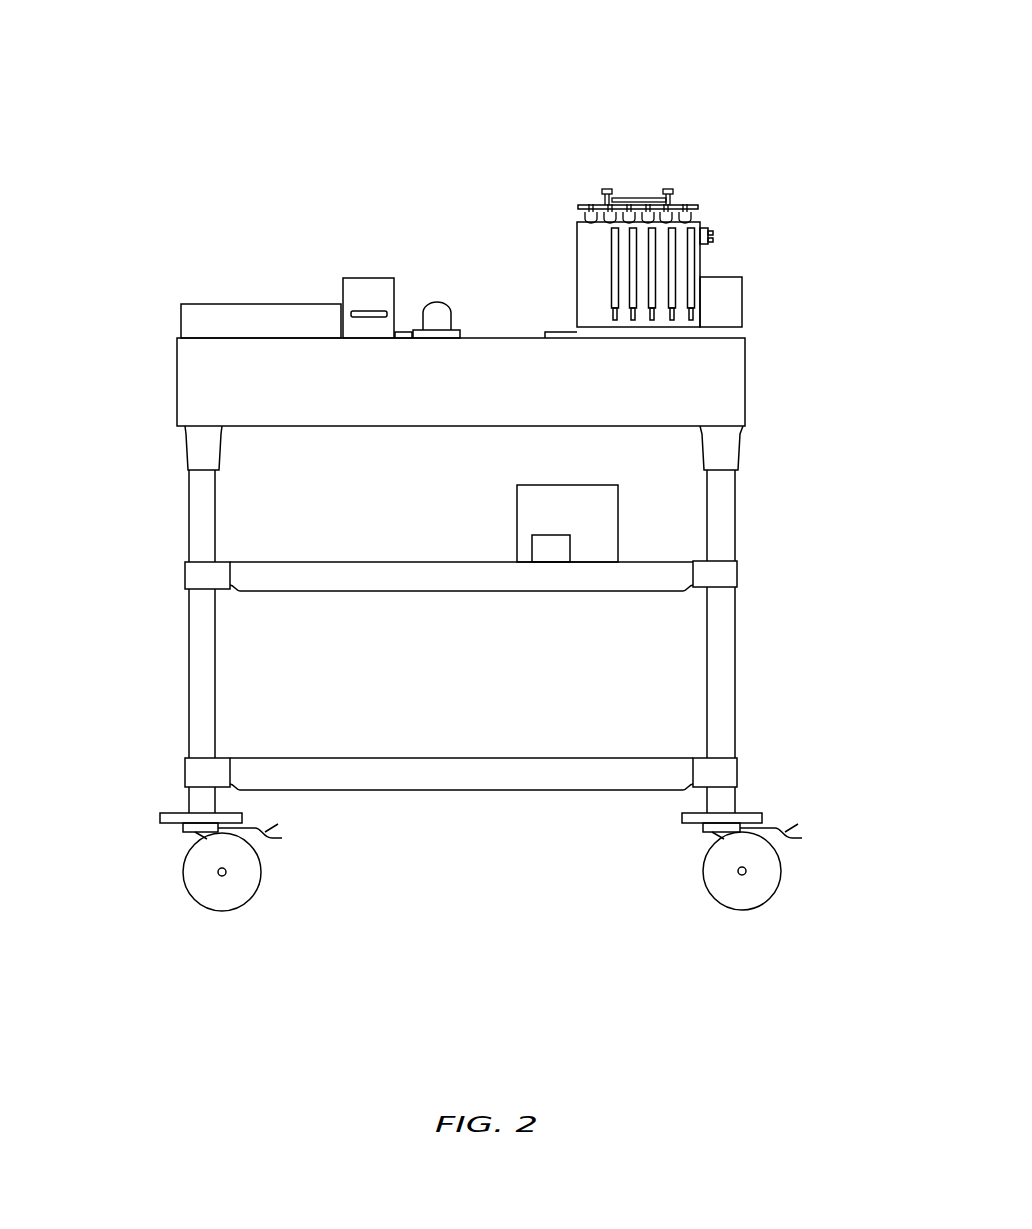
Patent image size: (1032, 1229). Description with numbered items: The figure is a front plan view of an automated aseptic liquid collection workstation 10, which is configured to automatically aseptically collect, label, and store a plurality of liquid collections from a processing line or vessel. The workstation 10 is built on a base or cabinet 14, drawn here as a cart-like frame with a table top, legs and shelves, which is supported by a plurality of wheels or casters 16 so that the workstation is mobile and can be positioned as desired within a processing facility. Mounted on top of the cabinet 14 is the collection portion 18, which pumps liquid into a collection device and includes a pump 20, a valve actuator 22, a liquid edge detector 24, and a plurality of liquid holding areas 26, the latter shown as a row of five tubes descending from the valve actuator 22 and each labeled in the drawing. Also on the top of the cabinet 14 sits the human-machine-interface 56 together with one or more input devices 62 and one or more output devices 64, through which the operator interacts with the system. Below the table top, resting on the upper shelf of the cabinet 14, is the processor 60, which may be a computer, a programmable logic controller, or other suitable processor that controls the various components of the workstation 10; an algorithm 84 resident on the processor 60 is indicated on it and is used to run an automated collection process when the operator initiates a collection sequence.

The automated aseptic liquid collection workstation 10 is at (175, 275).
The base or cabinet 14 is at (745, 408).
The wheels or casters 16 is at (782, 855).
The collection portion 18 is at (565, 98).
The pump 20 is at (742, 277).
The valve actuator 22 is at (577, 220).
The liquid edge detector 24 is at (708, 222).
The liquid holding areas 26 is at (616, 321).
The human-machine-interface (HMI) 56 is at (245, 304).
The processor 60 is at (618, 505).
The input devices 62 is at (437, 302).
The output devices 64 is at (367, 278).
The algorithm 84 is at (550, 562).